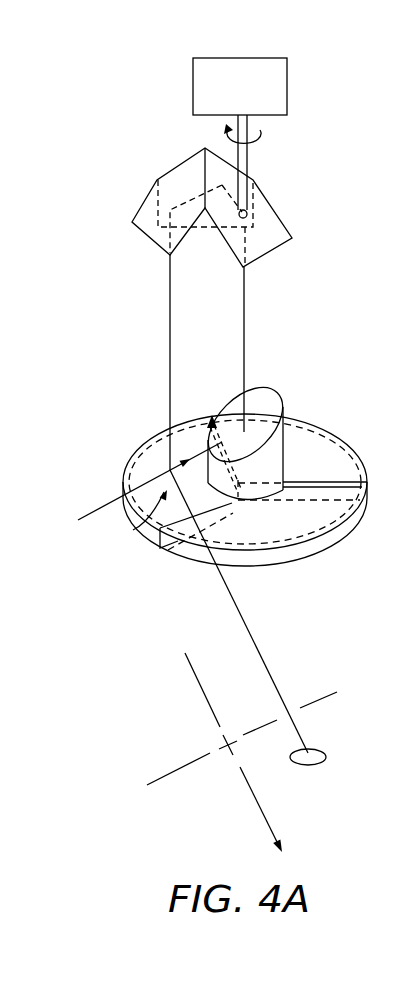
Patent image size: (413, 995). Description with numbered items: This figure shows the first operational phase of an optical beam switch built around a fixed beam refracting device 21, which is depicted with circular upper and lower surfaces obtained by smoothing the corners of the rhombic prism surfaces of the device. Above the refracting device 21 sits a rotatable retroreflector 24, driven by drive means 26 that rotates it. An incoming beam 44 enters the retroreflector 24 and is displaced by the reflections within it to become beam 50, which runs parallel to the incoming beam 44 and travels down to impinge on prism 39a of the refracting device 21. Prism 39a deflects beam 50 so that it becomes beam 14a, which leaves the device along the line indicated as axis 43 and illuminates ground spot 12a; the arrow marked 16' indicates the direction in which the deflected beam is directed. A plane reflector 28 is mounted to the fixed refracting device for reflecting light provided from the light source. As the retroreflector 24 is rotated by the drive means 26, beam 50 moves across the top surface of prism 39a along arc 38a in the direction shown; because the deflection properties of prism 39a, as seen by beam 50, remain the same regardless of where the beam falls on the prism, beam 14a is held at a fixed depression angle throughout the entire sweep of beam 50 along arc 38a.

The drive means 26 is at (218, 58).
The rotatable retroreflector 24 is at (185, 172).
The beam 50 is at (170, 341).
The incoming beam 44 is at (244, 318).
The prism 39a is at (152, 444).
The plane reflector 28 is at (285, 452).
The axis line 43 is at (92, 512).
The arc 38a is at (133, 530).
The beam refracting device 21 is at (195, 567).
The beam 14a is at (247, 623).
The ground spot 12a is at (318, 768).
The beam direction arrow 16' is at (242, 752).